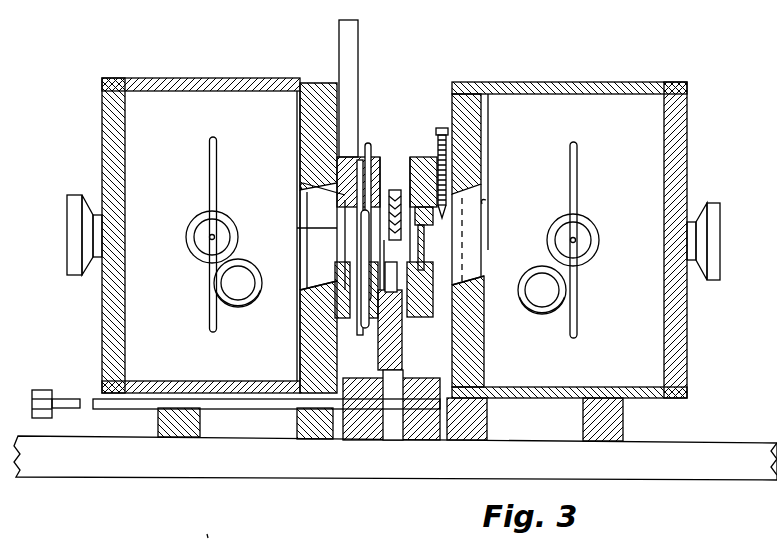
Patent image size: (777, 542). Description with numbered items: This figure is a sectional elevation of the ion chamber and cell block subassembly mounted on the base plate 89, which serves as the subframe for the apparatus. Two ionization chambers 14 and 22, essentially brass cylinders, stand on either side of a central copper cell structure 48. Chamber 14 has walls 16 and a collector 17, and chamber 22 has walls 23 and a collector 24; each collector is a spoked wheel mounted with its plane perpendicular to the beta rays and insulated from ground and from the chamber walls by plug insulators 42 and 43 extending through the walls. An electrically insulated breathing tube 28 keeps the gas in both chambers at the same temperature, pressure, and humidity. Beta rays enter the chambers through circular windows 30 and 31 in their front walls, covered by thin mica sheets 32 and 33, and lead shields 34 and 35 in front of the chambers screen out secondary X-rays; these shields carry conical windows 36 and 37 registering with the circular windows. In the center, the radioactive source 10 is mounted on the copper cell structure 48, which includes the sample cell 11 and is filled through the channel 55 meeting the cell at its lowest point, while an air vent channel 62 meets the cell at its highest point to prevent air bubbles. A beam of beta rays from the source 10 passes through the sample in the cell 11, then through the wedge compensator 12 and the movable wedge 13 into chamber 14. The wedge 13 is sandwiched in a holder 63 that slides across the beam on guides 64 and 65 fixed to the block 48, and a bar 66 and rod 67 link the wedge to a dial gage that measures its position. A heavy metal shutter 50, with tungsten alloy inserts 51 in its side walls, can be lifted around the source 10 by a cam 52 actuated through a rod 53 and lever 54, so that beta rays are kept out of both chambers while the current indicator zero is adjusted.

The radioactive source 10 is at (385, 240).
The sample cell 11 is at (358, 247).
The wedge compensator 12 is at (442, 127).
The movable wedge 13 is at (345, 239).
The ionization chamber 14 is at (185, 77).
The walls 16 is at (232, 84).
The collector 17 is at (207, 297).
The ionization chamber 22 is at (603, 80).
The walls 23 is at (549, 86).
The collector 24 is at (569, 320).
The breathing tube 28 is at (229, 292).
The circular window 30 is at (303, 187).
The circular window 31 is at (486, 200).
The mica sheet 32 is at (297, 229).
The mica sheet 33 is at (486, 232).
The lead shield 34 is at (318, 121).
The lead shield 35 is at (470, 152).
The conical window 36 is at (335, 283).
The conical window 37 is at (462, 292).
The plug insulator 42 is at (219, 235).
The plug insulator 43 is at (580, 238).
The copper cell structure 48 is at (414, 156).
The shutter 50 is at (404, 334).
The tungsten alloy inserts 51 is at (392, 302).
The cam 52 is at (403, 380).
The rod 53 is at (67, 398).
The lever 54 is at (40, 390).
The channel 55 is at (363, 329).
The air vent channel 62 is at (372, 150).
The holder 63 is at (361, 160).
The guide 64 is at (338, 166).
The guide 65 is at (333, 300).
The bar 66 is at (339, 32).
The rod 67 is at (210, 527).
The base plate 89 is at (699, 443).